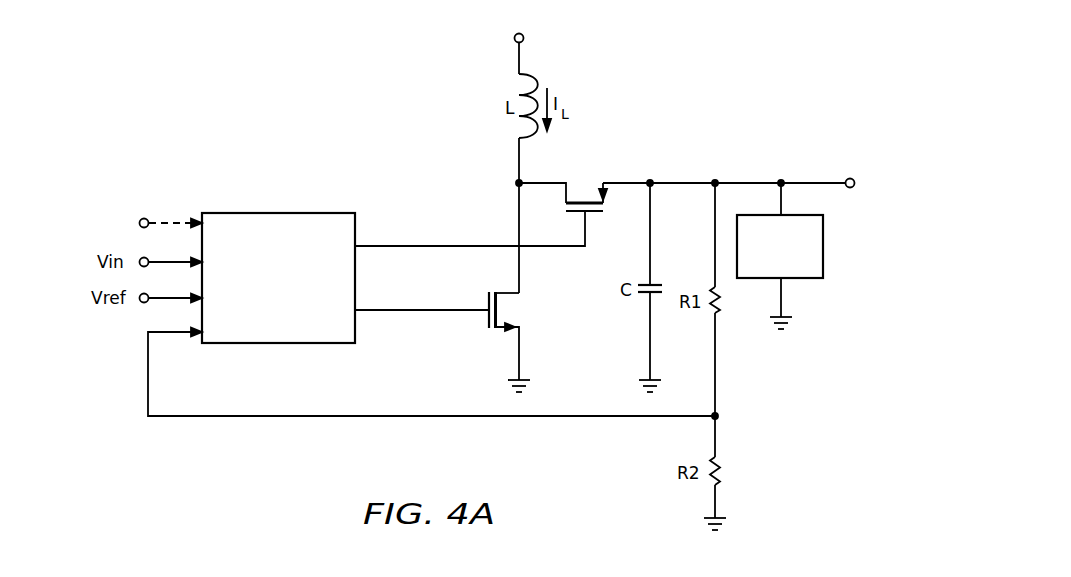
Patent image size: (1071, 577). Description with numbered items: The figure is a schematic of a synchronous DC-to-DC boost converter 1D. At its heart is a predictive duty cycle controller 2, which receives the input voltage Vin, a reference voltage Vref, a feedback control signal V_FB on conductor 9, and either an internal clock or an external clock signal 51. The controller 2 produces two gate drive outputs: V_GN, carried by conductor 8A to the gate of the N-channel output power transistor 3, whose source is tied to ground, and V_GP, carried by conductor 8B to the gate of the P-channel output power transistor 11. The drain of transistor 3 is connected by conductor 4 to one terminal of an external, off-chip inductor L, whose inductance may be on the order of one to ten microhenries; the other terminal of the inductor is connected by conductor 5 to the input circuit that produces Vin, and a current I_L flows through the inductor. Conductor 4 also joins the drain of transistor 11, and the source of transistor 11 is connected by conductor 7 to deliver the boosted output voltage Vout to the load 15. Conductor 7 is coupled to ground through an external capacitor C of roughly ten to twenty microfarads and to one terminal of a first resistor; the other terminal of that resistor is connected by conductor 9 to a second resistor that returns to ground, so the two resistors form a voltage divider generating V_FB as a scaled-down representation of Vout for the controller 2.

The synchronous DC-to-DC boost converter 1D is at (336, 69).
The predictive duty cycle controller 2 is at (277, 213).
The external clock input 51 is at (168, 222).
The conductor 8B is at (395, 246).
The conductor 8A is at (395, 312).
The N-channel output power transistor 3 is at (489, 320).
The conductor 4 is at (519, 203).
The conductor 5 is at (514, 40).
The P-channel output power transistor 11 is at (595, 215).
The conductor 7 is at (683, 183).
The conductor 9 is at (148, 377).
The load 15 is at (825, 248).